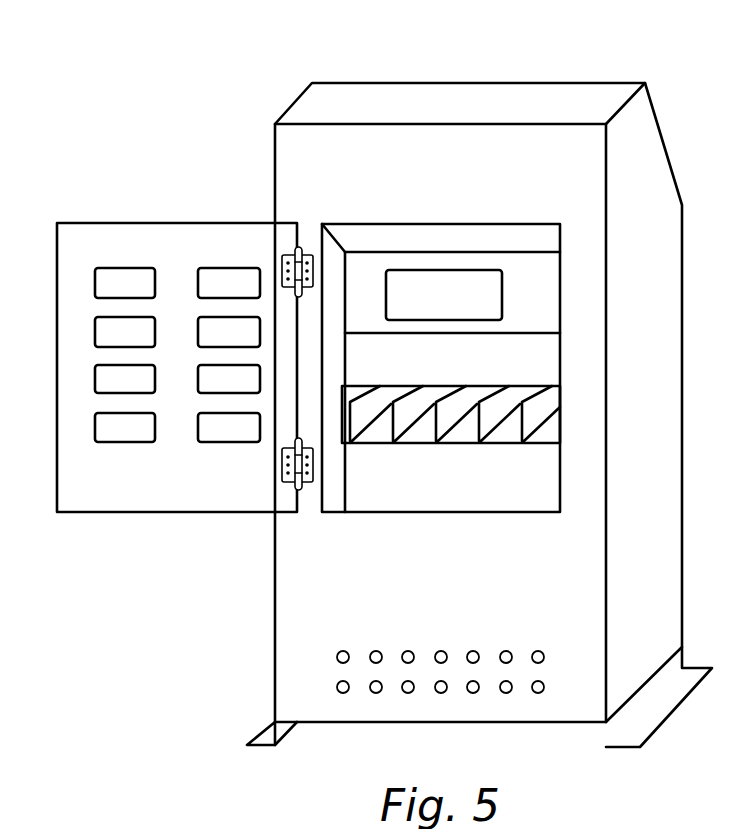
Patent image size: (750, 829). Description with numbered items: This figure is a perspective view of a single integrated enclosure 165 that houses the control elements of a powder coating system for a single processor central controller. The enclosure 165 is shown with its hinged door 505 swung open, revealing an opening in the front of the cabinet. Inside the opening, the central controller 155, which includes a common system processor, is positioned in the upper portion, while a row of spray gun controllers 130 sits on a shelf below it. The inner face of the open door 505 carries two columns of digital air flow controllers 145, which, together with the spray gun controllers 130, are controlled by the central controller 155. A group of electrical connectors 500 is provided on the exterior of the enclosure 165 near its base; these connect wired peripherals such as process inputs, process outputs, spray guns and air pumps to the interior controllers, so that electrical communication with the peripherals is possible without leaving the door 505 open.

The spray gun controllers 130 is at (412, 410).
The digital air flow controllers 145 is at (113, 379).
The central controller 155 is at (467, 270).
The enclosure 165 is at (290, 597).
The electrical connectors 500 is at (560, 648).
The door 505 is at (187, 488).